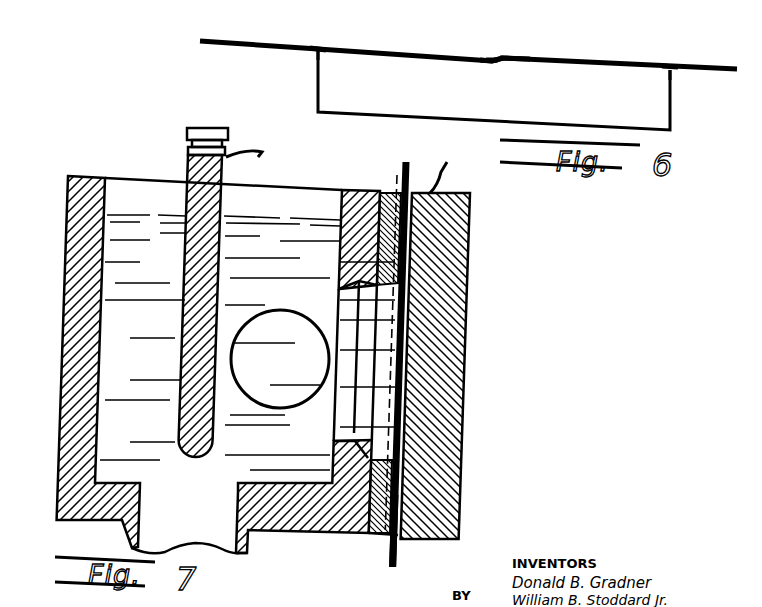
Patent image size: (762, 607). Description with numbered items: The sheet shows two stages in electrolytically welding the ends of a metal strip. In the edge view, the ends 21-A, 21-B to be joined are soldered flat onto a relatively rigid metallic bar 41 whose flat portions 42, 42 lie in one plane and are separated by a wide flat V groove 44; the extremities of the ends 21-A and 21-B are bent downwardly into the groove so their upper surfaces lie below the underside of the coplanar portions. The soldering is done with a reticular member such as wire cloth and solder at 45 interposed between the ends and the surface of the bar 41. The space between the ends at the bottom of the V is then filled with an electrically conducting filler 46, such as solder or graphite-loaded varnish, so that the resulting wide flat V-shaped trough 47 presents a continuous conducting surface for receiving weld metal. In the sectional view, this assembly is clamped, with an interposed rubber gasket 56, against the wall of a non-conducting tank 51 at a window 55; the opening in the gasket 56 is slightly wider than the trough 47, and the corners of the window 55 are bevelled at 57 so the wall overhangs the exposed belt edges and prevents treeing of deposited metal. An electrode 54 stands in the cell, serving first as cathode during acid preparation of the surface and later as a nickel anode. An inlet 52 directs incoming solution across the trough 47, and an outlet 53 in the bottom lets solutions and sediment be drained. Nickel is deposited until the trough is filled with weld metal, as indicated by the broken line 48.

In FIG. 6, the end of metal strip 21-A is at (282, 42).
In FIG. 7, the end of metal strip 21-A is at (403, 165).
In FIG. 6, the end of metal strip 21-B is at (680, 65).
In FIG. 7, the end of metal strip 21-B is at (390, 570).
In FIG. 6, the bar 41 is at (670, 99).
In FIG. 7, the bar 41 is at (468, 272).
In FIG. 6, the flat portions 42 is at (359, 52).
In FIG. 6, the V groove 44 is at (485, 63).
In FIG. 6, the solder with reticular member 45 is at (317, 50).
In FIG. 7, the solder with reticular member 45 is at (411, 194).
In FIG. 6, the electrically conducting filler 46 is at (498, 58).
In FIG. 7, the electrically conducting filler 46 is at (407, 363).
In FIG. 6, the trough 47 is at (493, 56).
In FIG. 7, the trough 47 is at (413, 340).
In FIG. 7, the broken line 48 is at (410, 383).
In FIG. 7, the tank 51 is at (321, 189).
In FIG. 7, the inlet 52 is at (280, 359).
In FIG. 7, the outlet 53 is at (189, 531).
In FIG. 7, the electrode 54 is at (181, 357).
In FIG. 7, the window 55 is at (339, 292).
In FIG. 7, the gasket 56 is at (375, 543).
In FIG. 7, the bevelled corners 57 is at (338, 432).